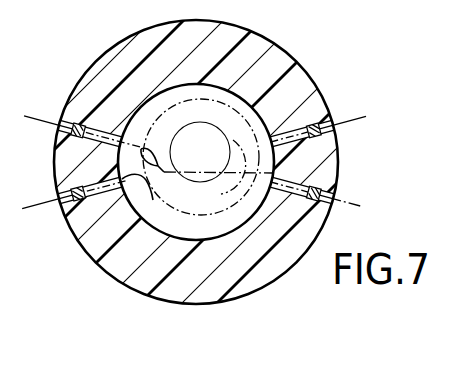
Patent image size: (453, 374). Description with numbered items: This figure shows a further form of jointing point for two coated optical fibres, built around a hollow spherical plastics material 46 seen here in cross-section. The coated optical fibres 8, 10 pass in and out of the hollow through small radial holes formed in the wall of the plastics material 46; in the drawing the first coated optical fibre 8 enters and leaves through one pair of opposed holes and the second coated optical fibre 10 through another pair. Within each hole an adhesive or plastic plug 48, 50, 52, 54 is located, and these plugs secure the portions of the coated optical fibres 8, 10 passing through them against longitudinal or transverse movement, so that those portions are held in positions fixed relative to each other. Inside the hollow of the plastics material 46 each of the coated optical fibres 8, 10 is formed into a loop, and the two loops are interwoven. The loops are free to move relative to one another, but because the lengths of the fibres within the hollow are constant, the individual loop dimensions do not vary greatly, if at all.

The coated optical fibre 8 is at (42, 125).
The coated optical fibre 10 is at (37, 205).
The hollow spherical plastics material 46 is at (276, 63).
The adhesive or plastic plug 48 is at (72, 120).
The adhesive or plastic plug 50 is at (324, 116).
The adhesive or plastic plug 52 is at (79, 202).
The adhesive or plastic plug 54 is at (327, 190).